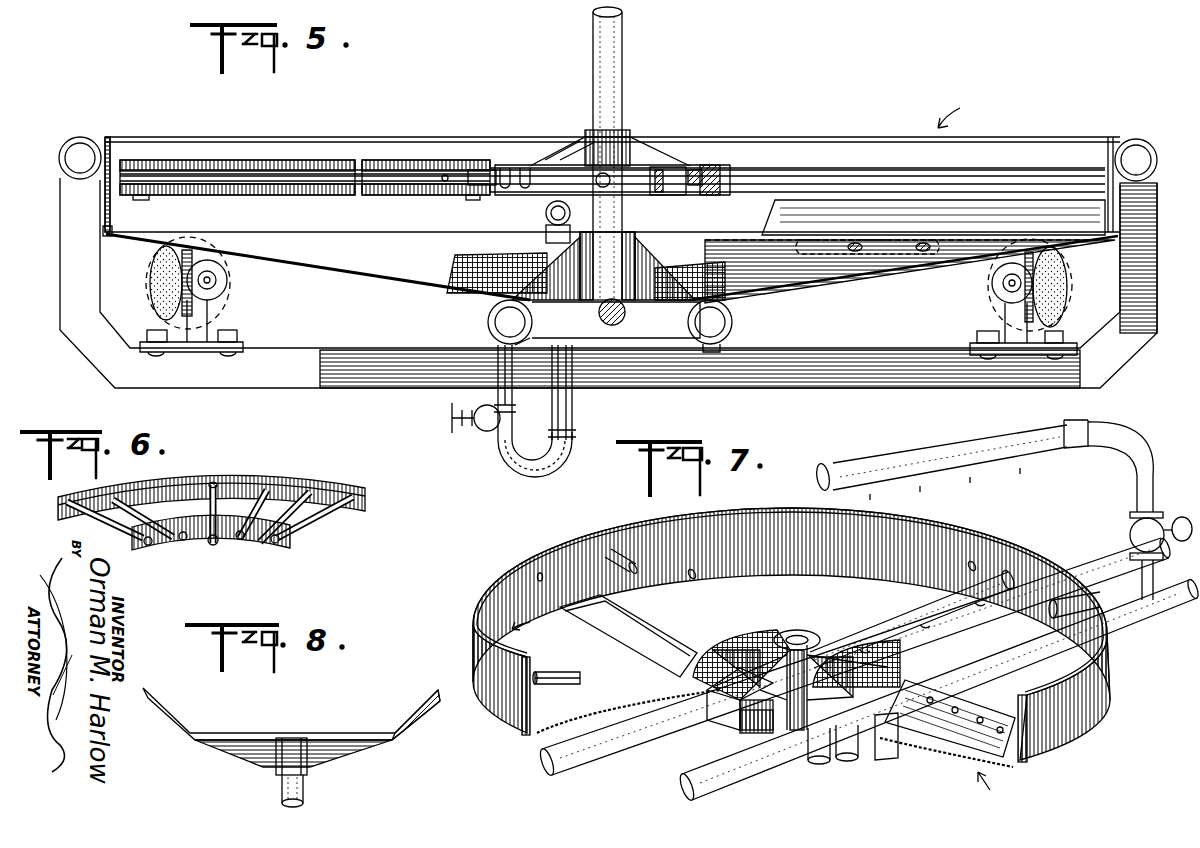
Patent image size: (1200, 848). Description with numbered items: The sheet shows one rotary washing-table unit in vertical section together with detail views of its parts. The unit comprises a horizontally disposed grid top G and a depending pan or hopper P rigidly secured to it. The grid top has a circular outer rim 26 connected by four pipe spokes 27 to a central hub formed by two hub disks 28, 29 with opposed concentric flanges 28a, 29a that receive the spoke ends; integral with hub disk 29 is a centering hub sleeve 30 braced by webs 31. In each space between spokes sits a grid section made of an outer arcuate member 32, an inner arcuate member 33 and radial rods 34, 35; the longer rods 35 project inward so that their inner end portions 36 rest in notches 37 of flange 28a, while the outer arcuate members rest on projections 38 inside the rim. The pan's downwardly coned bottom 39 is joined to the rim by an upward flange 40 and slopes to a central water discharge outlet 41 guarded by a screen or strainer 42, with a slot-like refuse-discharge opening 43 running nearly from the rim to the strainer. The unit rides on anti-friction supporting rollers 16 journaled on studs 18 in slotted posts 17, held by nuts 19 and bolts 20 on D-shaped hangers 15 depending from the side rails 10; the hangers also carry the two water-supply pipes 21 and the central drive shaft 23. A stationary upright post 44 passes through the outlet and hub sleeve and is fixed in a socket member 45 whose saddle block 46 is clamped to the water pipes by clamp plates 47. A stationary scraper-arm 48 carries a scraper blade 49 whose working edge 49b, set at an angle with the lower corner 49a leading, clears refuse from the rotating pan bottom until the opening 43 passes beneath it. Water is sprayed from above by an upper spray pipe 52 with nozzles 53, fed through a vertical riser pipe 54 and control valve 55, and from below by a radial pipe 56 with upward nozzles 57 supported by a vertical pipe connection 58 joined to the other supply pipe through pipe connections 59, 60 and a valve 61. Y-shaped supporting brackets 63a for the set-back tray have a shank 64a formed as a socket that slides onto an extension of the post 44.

In FIG. 5, the side rails 10 is at (62, 145).
In FIG. 5, the D-shaped hangers 15 is at (852, 365).
In FIG. 5, the anti-friction supporting rollers 16 is at (152, 275).
In FIG. 5, the slotted post 17 is at (210, 320).
In FIG. 5, the studs 18 is at (216, 278).
In FIG. 5, the nuts 19 is at (216, 282).
In FIG. 5, the bolts 20 is at (155, 330).
In FIG. 5, the water-supply pipes 21 is at (488, 322).
In FIG. 7, the water-supply pipes 21 is at (600, 760).
In FIG. 5, the drive shaft 23 is at (620, 322).
In FIG. 5, the outer rim 26 is at (108, 148).
In FIG. 7, the outer rim 26 is at (476, 624).
In FIG. 5, the radial bars or spokes 27 is at (480, 168).
In FIG. 7, the radial bars or spokes 27 is at (612, 548).
In FIG. 5, the hub disk 28 is at (705, 192).
In FIG. 5, the hub disk flange 28a is at (705, 168).
In FIG. 5, the hub disk 29 is at (660, 166).
In FIG. 5, the hub disk flange 29a is at (690, 168).
In FIG. 5, the centering hub sleeve 30 is at (590, 140).
In FIG. 5, the webs 31 is at (572, 160).
In FIG. 5, the outer arcuate member 32 is at (215, 165).
In FIG. 6, the outer arcuate member 32 is at (100, 500).
In FIG. 5, the inner arcuate member 33 is at (372, 163).
In FIG. 6, the inner arcuate member 33 is at (160, 550).
In FIG. 5, the radial rods 34 is at (310, 178).
In FIG. 6, the radial rods 34 is at (350, 488).
In FIG. 6, the radial rods 35 is at (205, 485).
In FIG. 5, the inner end portions 36 is at (440, 185).
In FIG. 6, the inner end portions 36 is at (220, 549).
In FIG. 5, the notches 37 is at (526, 165).
In FIG. 5, the projections 38 is at (141, 200).
In FIG. 7, the projections 38 is at (698, 570).
In FIG. 5, the downwardly coned bottom 39 is at (890, 275).
In FIG. 7, the downwardly coned bottom 39 is at (530, 720).
In FIG. 5, the flange 40 is at (103, 230).
In FIG. 7, the flange 40 is at (495, 710).
In FIG. 5, the central water discharge outlet 41 is at (480, 285).
In FIG. 7, the central water discharge outlet 41 is at (870, 655).
In FIG. 5, the screen or strainer 42 is at (455, 268).
In FIG. 7, the screen or strainer 42 is at (715, 662).
In FIG. 7, the refuse-discharge opening 43 is at (635, 625).
In FIG. 5, the upright post or stub shaft 44 is at (595, 36).
In FIG. 8, the upright post or stub shaft 44 is at (305, 790).
In FIG. 5, the socket member 45 is at (612, 265).
In FIG. 7, the socket member 45 is at (793, 632).
In FIG. 5, the saddle block 46 is at (728, 290).
In FIG. 7, the saddle block 46 is at (748, 731).
In FIG. 5, the clamp plates 47 is at (712, 352).
In FIG. 7, the clamp plates 47 is at (740, 725).
In FIG. 5, the scraper-arm 48 is at (740, 200).
In FIG. 7, the scraper-arm 48 is at (905, 682).
In FIG. 5, the scraper blade 49 is at (800, 238).
In FIG. 7, the scraper blade 49 is at (960, 712).
In FIG. 7, the lower corner 49a is at (887, 755).
In FIG. 7, the working edge 49b is at (945, 768).
In FIG. 7, the upper spray pipe 52 is at (962, 460).
In FIG. 7, the spray openings or nozzles 53 is at (918, 492).
In FIG. 7, the vertical riser pipe 54 is at (1150, 492).
In FIG. 7, the control valve 55 is at (1130, 528).
In FIG. 5, the radial pipe 56 is at (545, 220).
In FIG. 7, the radial pipe 56 is at (965, 598).
In FIG. 7, the spray openings or nozzles 57 is at (870, 600).
In FIG. 5, the vertical pipe connection 58 is at (572, 408).
In FIG. 5, the pipe connection 59 is at (508, 372).
In FIG. 5, the pipe connection 60 is at (520, 472).
In FIG. 5, the valve 61 is at (480, 430).
In FIG. 8, the Y-shaped supporting brackets 63a is at (342, 730).
In FIG. 8, the shank 64a is at (288, 762).
In FIG. 5, the grid top G is at (961, 108).
In FIG. 5, the pan or hopper P is at (340, 288).
In FIG. 7, the pan or hopper P is at (996, 788).